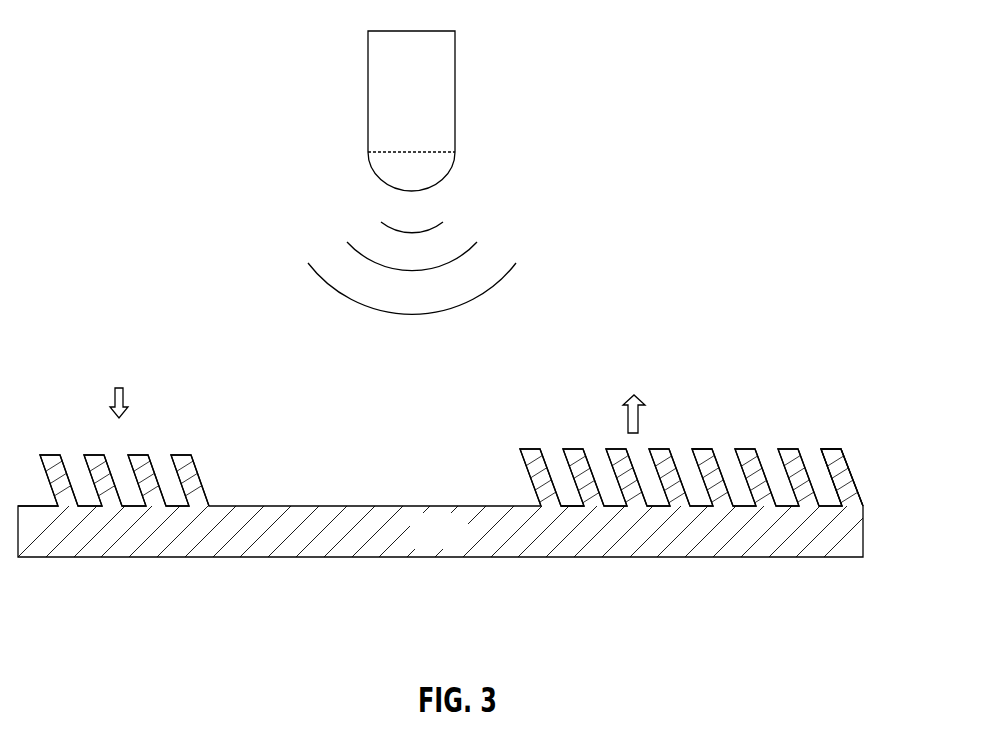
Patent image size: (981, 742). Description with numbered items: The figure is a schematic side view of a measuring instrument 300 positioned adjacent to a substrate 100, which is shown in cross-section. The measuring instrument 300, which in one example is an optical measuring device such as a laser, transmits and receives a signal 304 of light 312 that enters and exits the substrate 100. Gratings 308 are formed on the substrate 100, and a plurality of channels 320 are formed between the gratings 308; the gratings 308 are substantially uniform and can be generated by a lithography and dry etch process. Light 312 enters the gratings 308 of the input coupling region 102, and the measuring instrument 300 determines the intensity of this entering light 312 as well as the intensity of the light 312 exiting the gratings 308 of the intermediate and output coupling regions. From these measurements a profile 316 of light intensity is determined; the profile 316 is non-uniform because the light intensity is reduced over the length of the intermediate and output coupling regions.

The measuring instrument 300 is at (481, 89).
The signal 304 is at (504, 220).
The substrate 100 is at (460, 543).
The input coupling region 102 is at (117, 573).
The gratings 308 is at (854, 466).
The light 312 is at (124, 402).
The profile 316 is at (763, 382).
The channels 320 is at (576, 514).